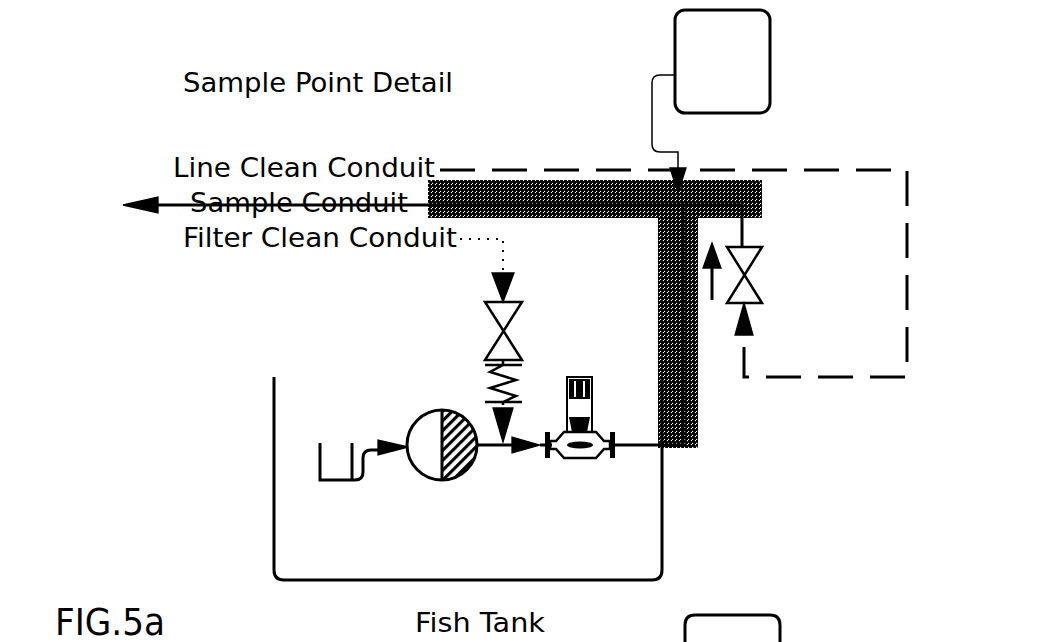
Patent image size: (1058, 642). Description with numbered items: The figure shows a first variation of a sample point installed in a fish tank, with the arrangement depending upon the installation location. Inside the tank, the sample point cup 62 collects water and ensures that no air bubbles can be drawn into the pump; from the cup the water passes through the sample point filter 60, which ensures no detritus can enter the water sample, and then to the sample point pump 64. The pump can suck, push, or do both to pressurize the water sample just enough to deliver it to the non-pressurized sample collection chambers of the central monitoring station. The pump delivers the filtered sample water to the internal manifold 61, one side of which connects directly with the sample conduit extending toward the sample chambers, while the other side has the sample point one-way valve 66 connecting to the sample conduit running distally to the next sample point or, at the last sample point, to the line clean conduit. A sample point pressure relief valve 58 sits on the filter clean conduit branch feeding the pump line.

The sample point pressure relief valve 58 is at (437, 357).
The sample point filter 60 is at (462, 487).
The internal manifold 61 is at (711, 101).
The sample point cup 62 is at (355, 503).
The sample point pump 64 is at (566, 469).
The sample point one-way valve 66 is at (791, 288).